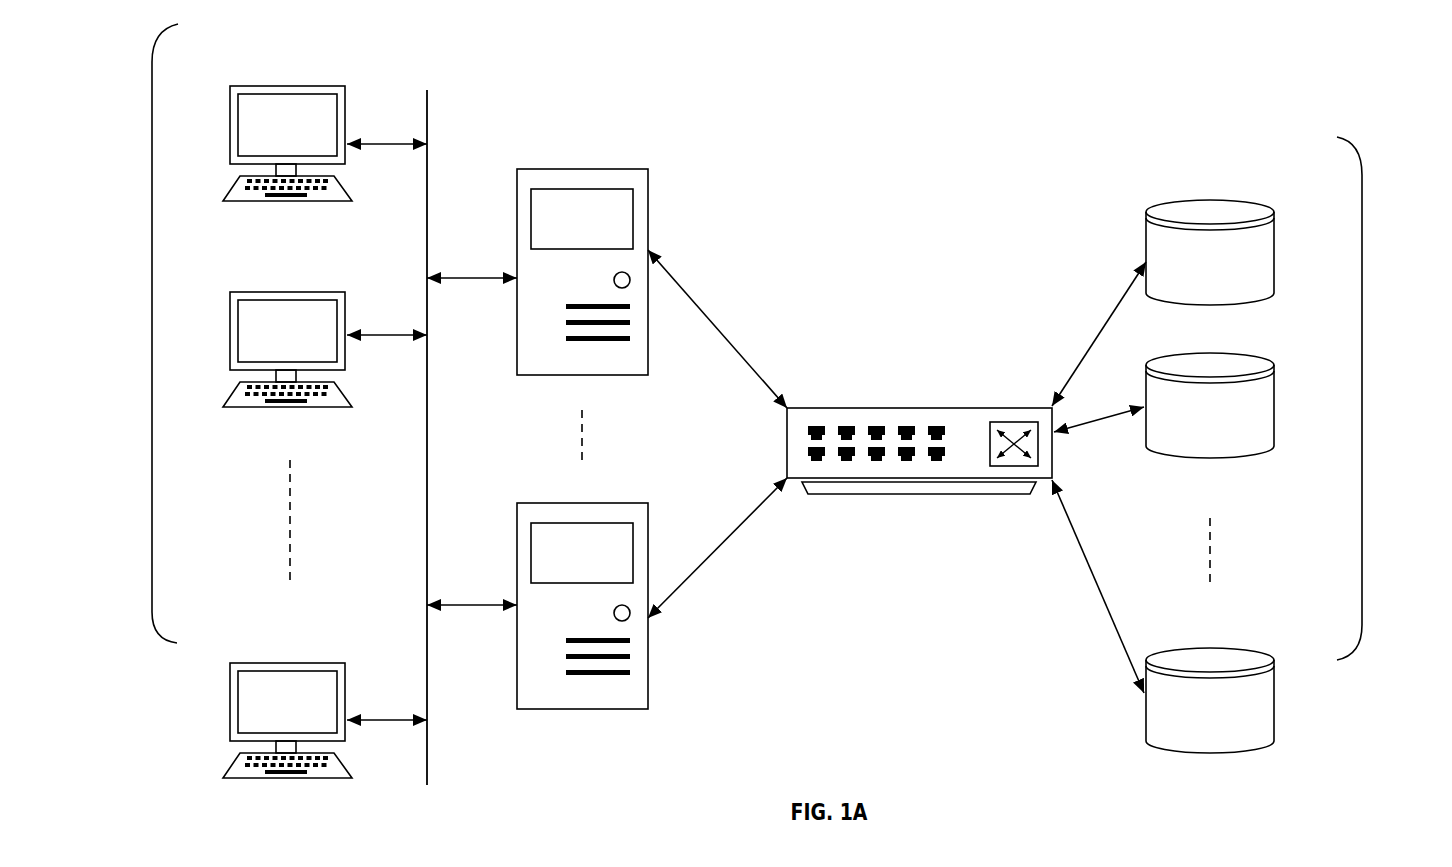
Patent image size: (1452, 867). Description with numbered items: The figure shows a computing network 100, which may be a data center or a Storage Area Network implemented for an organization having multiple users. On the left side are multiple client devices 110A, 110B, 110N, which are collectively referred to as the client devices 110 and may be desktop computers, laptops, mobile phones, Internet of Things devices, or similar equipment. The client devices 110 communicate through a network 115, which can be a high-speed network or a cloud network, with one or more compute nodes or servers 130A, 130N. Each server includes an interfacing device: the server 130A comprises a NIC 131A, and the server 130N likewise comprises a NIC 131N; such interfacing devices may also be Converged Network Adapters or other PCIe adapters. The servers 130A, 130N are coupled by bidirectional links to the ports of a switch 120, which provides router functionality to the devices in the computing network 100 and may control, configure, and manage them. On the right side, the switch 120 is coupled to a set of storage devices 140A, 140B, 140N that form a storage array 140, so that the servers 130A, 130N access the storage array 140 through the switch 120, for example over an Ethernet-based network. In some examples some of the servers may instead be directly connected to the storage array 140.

The computing network 100 is at (918, 108).
The client devices 110 is at (152, 268).
The client device 110A is at (262, 85).
The client device 110B is at (262, 291).
The client device 110N is at (272, 662).
The network 115 is at (428, 120).
The switch 120 is at (920, 407).
The server 130A is at (605, 246).
The server 130N is at (594, 647).
The NIC 131A is at (582, 219).
The NIC 131N is at (582, 553).
The storage array 140 is at (1362, 380).
The storage device 140A is at (1243, 200).
The storage device 140B is at (1250, 353).
The storage device 140N is at (1248, 648).